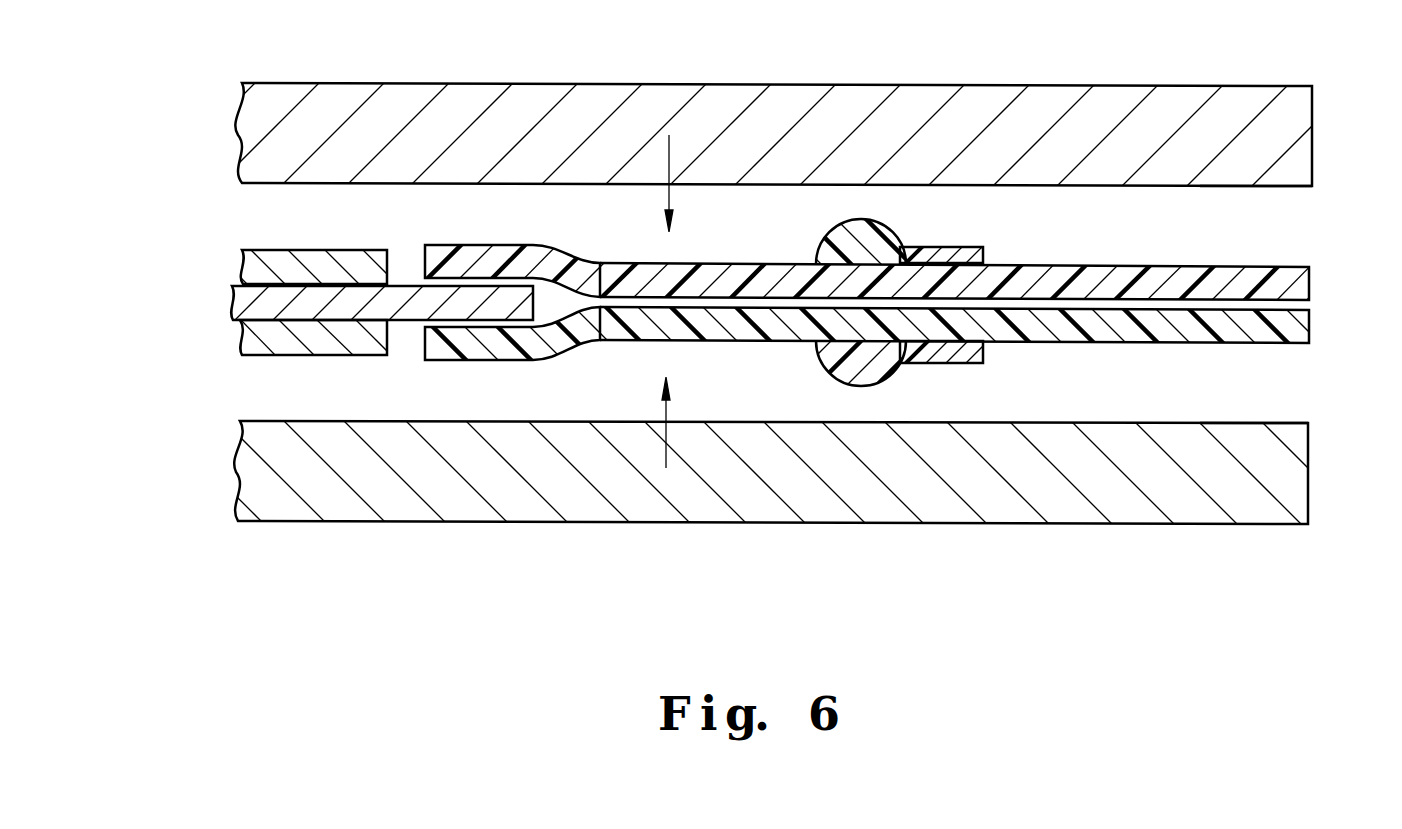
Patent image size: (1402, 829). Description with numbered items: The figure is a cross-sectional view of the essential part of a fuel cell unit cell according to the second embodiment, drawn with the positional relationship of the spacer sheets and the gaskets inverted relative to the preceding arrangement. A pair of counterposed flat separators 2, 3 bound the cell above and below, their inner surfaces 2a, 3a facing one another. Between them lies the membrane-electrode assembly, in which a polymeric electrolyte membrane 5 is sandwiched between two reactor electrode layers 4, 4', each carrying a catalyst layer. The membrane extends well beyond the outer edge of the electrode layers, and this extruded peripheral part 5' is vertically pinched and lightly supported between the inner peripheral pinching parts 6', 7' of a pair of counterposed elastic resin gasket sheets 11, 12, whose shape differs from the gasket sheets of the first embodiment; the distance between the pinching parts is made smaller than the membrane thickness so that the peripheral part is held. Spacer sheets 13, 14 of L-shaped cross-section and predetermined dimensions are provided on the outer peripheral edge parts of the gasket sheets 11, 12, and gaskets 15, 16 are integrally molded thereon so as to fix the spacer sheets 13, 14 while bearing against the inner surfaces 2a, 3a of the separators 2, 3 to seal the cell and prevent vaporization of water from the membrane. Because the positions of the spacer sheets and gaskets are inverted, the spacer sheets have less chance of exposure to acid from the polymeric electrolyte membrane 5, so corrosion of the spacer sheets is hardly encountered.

The separator 2 is at (1243, 107).
The inner surface of separator 2a is at (1278, 187).
The separator 3 is at (1242, 505).
The inner surface of separator 3a is at (1272, 423).
The reactor electrode layer 4 is at (324, 238).
The reactor electrode layer 4' is at (306, 366).
The polymeric electrolyte membrane 5 is at (336, 297).
The extruded peripheral part of polymeric electrolyte membrane 5' is at (465, 348).
The inner peripheral pinching part 6' is at (531, 246).
The inner peripheral pinching part 7' is at (520, 361).
The gasket sheet 11 is at (1290, 290).
The gasket sheet 12 is at (1297, 333).
The spacer sheet 13 is at (970, 247).
The spacer sheet 14 is at (968, 363).
The gasket 15 is at (840, 225).
The gasket 16 is at (850, 393).